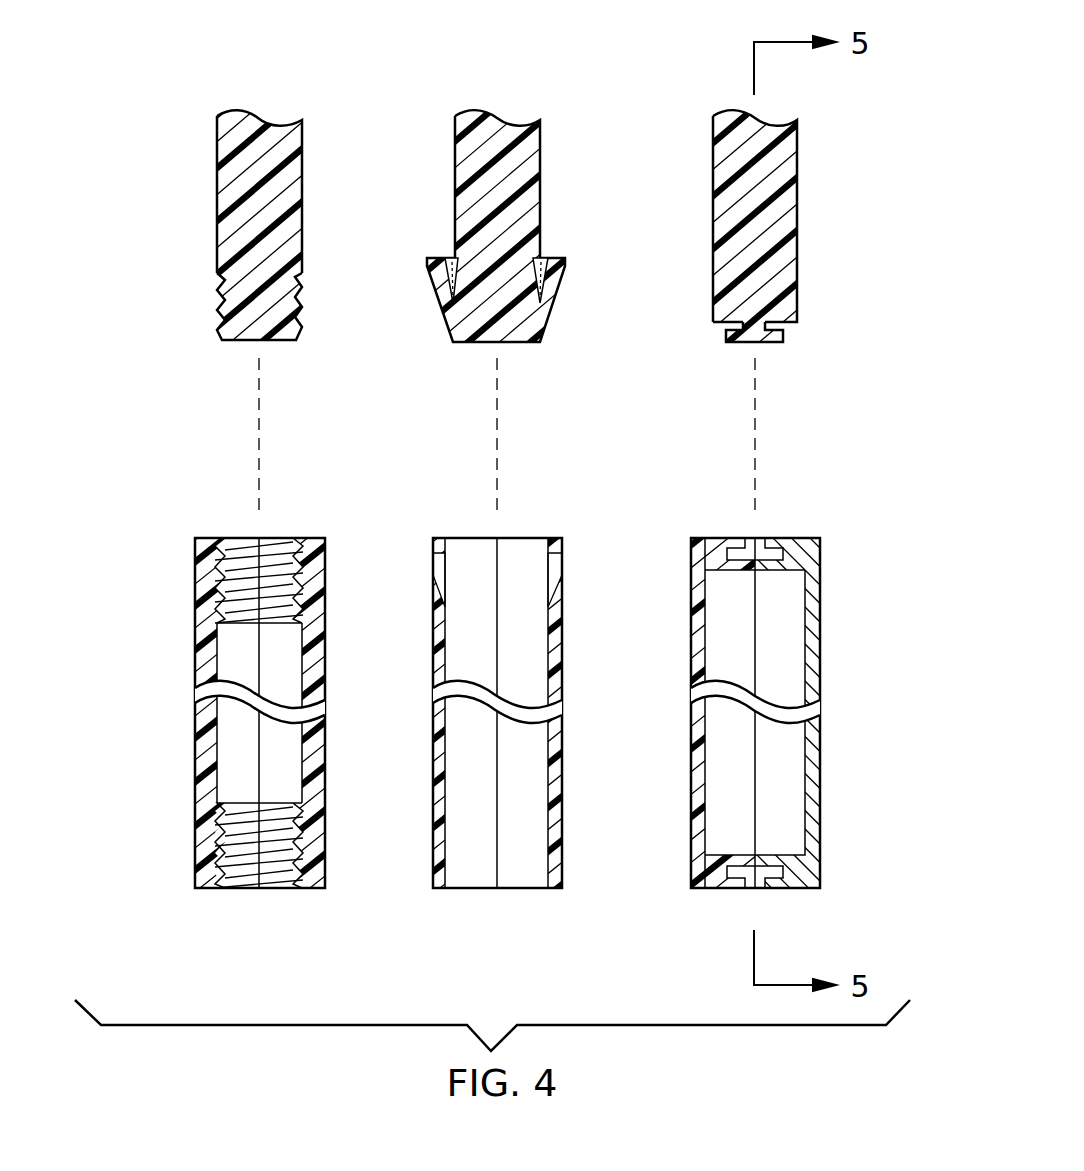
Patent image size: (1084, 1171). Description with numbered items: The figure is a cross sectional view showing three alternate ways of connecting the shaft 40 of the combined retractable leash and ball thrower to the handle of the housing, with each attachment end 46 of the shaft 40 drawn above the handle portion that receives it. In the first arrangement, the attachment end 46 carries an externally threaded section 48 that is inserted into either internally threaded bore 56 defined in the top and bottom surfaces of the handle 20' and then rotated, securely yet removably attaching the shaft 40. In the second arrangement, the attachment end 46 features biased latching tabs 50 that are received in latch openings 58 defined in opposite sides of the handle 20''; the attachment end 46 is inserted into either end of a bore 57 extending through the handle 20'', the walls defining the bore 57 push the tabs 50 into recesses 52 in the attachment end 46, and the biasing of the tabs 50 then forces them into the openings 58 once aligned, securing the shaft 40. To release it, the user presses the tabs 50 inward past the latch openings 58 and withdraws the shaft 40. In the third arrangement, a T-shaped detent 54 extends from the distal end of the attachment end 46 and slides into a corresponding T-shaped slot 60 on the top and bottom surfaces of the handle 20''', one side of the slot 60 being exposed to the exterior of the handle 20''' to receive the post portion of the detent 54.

The shaft 40 is at (542, 533).
The attachment end 46 is at (217, 253).
The externally threaded section 48 is at (222, 308).
The biased latching tabs 50 is at (435, 262).
The recesses 52 is at (556, 262).
The T-shaped detent 54 is at (783, 340).
The internally threaded bore 56 is at (247, 548).
The bore 57 is at (474, 553).
The latch openings 58 is at (437, 562).
The T-shaped slot 60 is at (753, 542).
The handle 20' is at (542, 585).
The handle 20'' is at (542, 585).
The handle 20''' is at (542, 585).